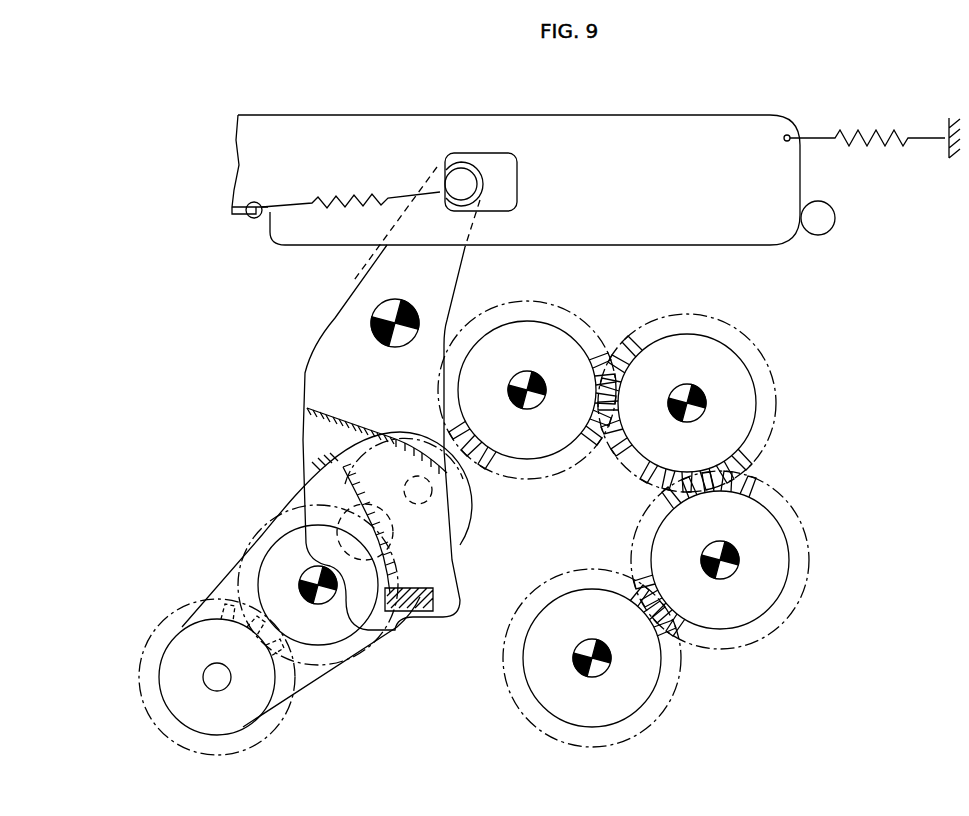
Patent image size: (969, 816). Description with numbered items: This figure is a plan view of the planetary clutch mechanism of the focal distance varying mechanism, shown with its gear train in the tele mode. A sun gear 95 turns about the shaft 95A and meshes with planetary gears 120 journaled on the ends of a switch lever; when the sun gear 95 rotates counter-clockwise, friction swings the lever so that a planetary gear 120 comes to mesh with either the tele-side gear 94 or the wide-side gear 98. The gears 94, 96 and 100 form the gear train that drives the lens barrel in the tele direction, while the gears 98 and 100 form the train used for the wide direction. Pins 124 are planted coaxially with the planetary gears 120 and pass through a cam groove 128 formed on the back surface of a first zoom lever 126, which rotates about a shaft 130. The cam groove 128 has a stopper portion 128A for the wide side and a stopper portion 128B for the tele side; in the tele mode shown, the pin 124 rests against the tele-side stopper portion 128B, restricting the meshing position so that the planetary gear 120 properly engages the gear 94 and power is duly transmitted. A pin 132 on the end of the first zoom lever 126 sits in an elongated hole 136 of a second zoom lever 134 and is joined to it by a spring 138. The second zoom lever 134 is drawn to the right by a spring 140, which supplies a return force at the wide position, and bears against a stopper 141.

The second zoom lever 134 is at (381, 135).
The elongated hole 136 is at (515, 160).
The pin 132 is at (470, 172).
The spring 138 is at (365, 192).
The spring 140 is at (866, 138).
The stopper 141 is at (833, 220).
The first zoom lever 126 is at (331, 385).
The shaft 130 is at (372, 335).
The cam groove 128 is at (329, 451).
The stopper portion for the wide side 128A is at (433, 620).
The stopper portion for the tele side 128B is at (470, 480).
The planetary gear 120 is at (280, 725).
The pin 124 is at (213, 683).
The sun gear 95 is at (357, 650).
The rotary gear shaft 95A is at (300, 588).
The tele-side gear 94 is at (580, 313).
The gear 96 is at (768, 320).
The wide-side gear 98 is at (668, 698).
The gear 100 is at (808, 492).